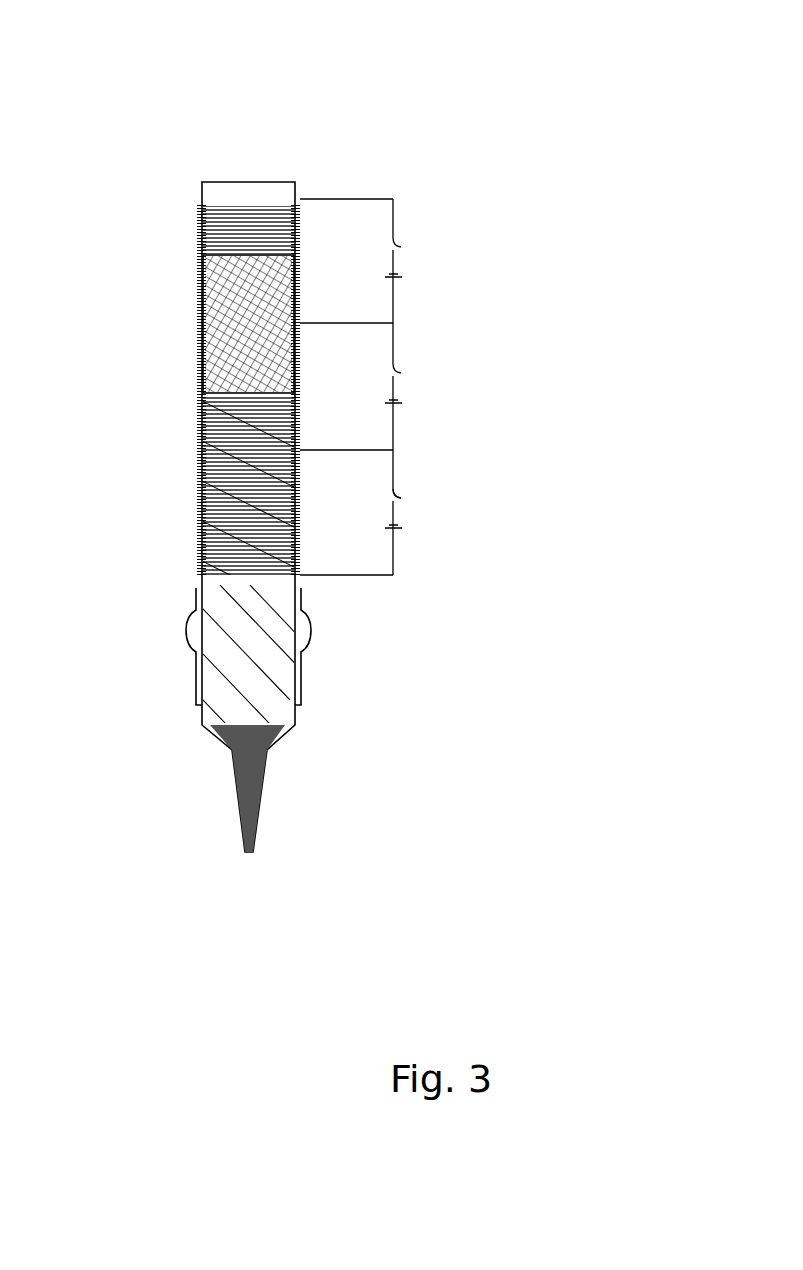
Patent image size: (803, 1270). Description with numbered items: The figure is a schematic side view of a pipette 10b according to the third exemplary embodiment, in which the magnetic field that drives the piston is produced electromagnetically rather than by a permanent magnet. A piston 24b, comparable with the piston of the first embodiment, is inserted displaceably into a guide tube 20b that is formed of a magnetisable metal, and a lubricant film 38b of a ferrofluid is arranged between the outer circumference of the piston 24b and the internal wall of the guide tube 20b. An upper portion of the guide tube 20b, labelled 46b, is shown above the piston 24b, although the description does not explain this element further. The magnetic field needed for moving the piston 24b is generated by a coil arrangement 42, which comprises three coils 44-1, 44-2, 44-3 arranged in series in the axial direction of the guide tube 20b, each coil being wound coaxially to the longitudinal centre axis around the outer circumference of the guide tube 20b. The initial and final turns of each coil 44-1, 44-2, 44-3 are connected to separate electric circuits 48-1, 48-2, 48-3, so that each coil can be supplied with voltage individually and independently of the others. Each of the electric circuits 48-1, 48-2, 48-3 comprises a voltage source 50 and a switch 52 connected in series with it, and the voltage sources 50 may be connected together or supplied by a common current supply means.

The pipette 10b is at (509, 103).
The guide tube 20b is at (201, 190).
The first layer 46b is at (228, 208).
The piston 24b is at (225, 330).
The lubricant film 38b is at (202, 330).
The coil arrangement 42 is at (188, 425).
The coil 44-1 is at (302, 232).
The coil 44-2 is at (300, 365).
The coil 44-3 is at (302, 490).
The electric circuit 48-1 is at (397, 208).
The electric circuit 48-2 is at (397, 340).
The electric circuit 48-3 is at (397, 465).
The switch 52 is at (399, 492).
The voltage source 50 is at (397, 535).